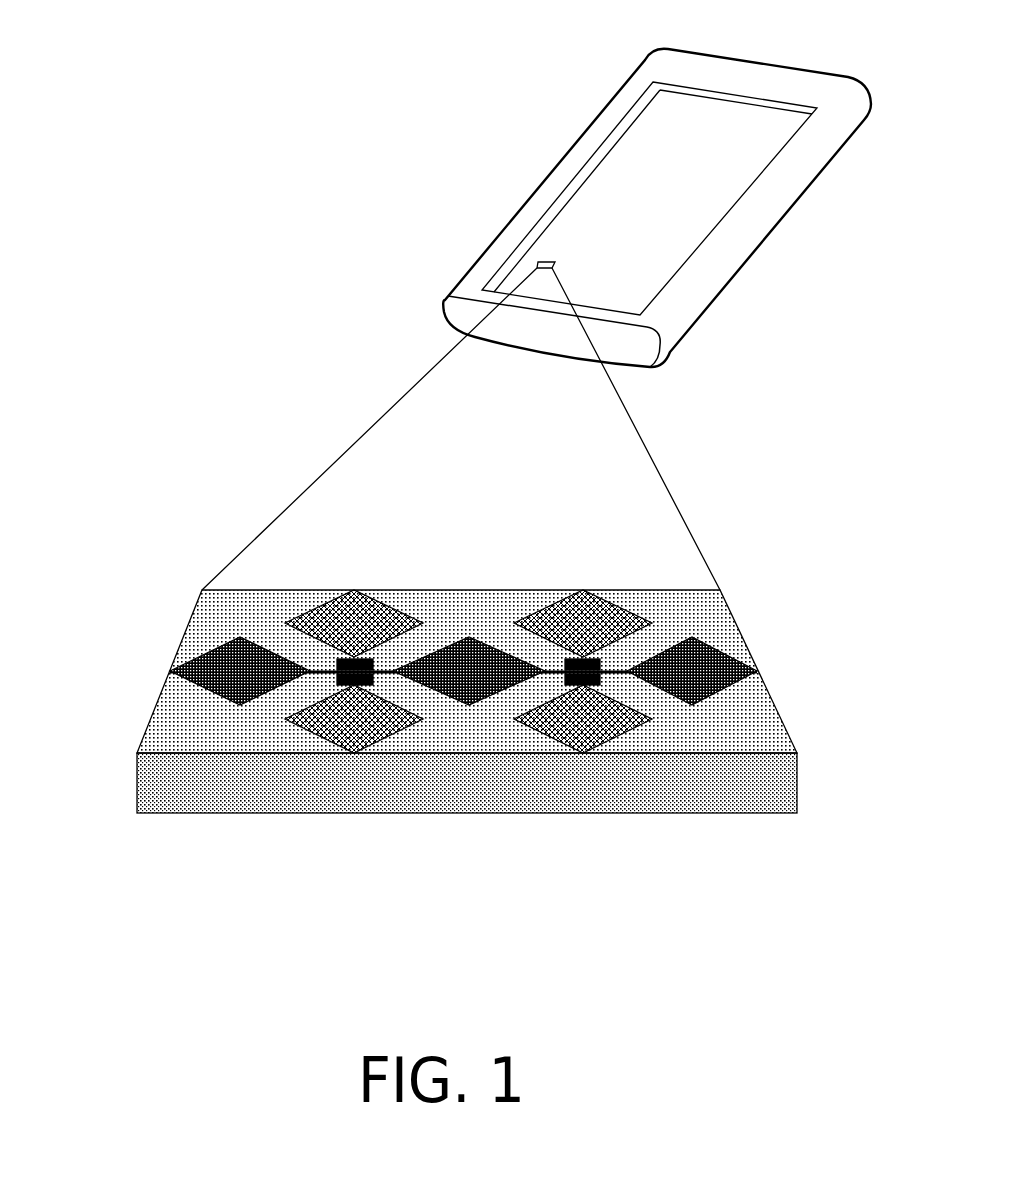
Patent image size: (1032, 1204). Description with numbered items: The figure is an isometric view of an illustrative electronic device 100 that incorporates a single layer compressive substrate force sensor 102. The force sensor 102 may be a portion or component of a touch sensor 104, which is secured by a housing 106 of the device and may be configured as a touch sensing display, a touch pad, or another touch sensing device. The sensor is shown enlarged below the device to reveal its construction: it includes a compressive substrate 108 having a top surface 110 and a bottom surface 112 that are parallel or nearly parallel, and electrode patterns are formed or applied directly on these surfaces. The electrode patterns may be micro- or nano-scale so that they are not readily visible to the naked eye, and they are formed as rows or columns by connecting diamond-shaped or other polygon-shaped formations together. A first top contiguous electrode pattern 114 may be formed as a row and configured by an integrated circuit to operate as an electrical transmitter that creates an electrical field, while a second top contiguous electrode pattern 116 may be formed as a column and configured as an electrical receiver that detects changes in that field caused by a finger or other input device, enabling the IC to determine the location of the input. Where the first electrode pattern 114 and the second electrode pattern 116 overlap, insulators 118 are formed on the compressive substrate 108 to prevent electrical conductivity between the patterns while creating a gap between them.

The electronic device 100 is at (618, 183).
The single layer compressive substrate force sensor 102 is at (168, 484).
The touch sensor 104 is at (665, 107).
The housing 106 is at (597, 133).
The compressive substrate 108 is at (170, 727).
The top surface 110 is at (205, 606).
The bottom surface 112 is at (145, 826).
The first top contiguous electrode pattern 114 is at (310, 727).
The second top contiguous electrode pattern 116 is at (210, 650).
The insulator 118 is at (343, 685).